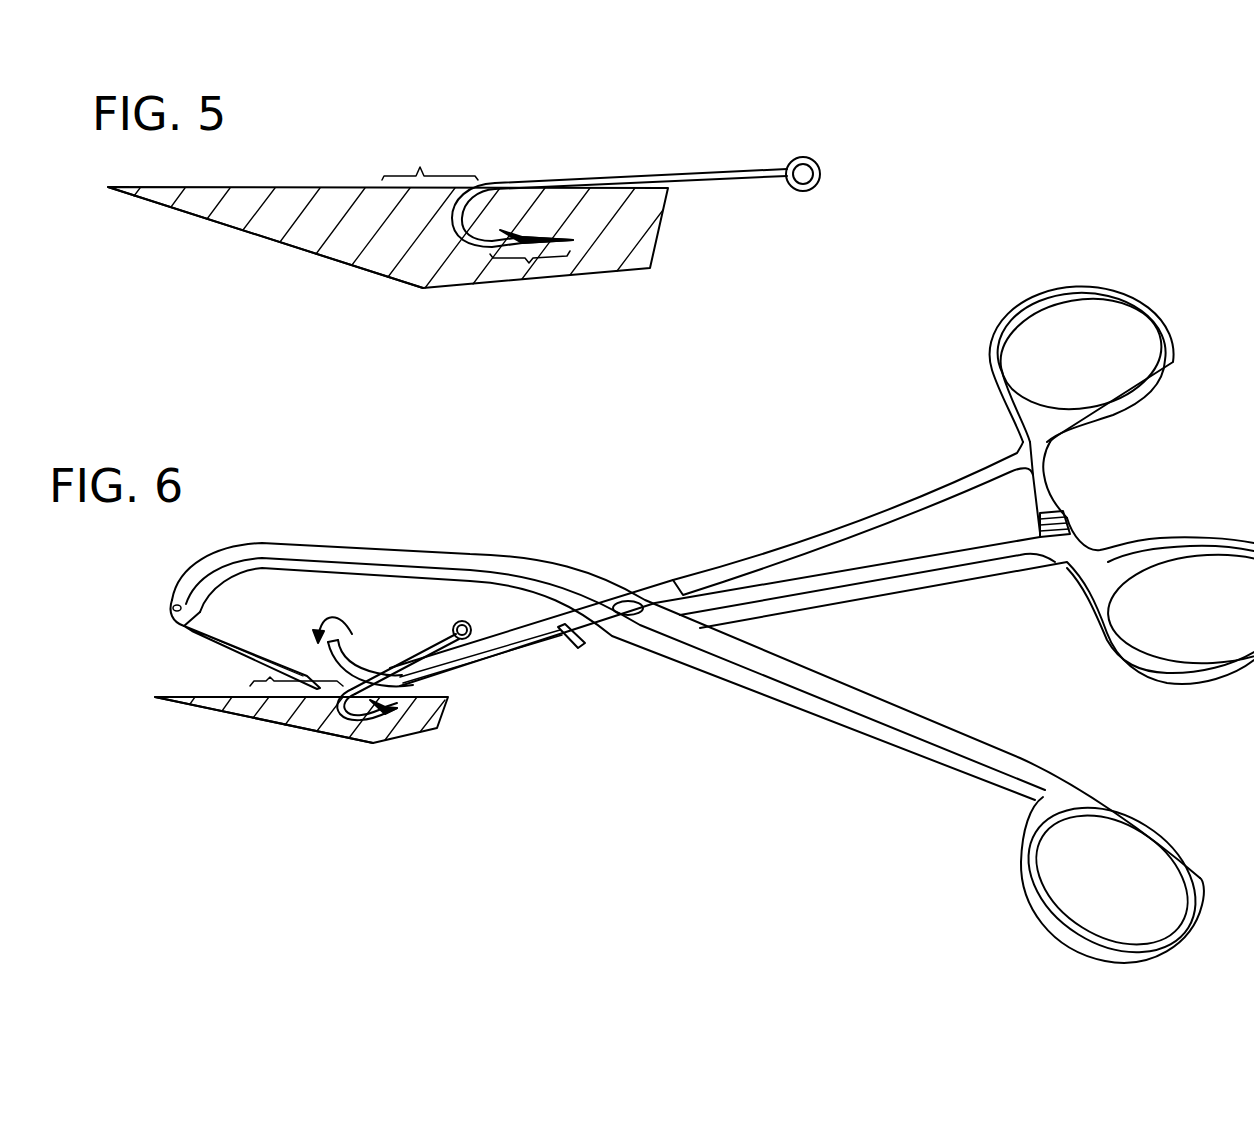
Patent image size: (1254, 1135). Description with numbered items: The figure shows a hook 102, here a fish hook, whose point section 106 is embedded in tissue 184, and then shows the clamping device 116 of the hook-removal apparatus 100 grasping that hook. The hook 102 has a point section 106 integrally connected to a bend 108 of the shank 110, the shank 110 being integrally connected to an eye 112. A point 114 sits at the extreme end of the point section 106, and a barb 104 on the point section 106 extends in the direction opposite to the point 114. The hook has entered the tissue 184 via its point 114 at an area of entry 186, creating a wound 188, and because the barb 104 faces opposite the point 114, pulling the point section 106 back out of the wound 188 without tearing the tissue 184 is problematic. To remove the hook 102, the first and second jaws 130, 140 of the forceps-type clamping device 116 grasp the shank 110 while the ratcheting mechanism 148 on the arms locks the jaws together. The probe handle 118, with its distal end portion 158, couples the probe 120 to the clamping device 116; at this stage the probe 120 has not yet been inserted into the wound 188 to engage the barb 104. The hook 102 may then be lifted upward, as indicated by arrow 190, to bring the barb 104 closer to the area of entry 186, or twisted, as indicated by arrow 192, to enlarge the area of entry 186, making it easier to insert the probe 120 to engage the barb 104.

In FIG. 6, the apparatus 100 is at (685, 634).
In FIG. 5, the hook 102 is at (619, 185).
In FIG. 6, the hook 102 is at (395, 688).
In FIG. 5, the barb 104 is at (517, 229).
In FIG. 5, the point section 106 is at (529, 264).
In FIG. 5, the bend 108 is at (457, 181).
In FIG. 5, the shank 110 is at (704, 170).
In FIG. 6, the shank 110 is at (340, 707).
In FIG. 5, the eye 112 is at (798, 157).
In FIG. 5, the point 114 is at (575, 240).
In FIG. 6, the clamping device 116 is at (815, 531).
In FIG. 6, the probe handle 118 is at (685, 634).
In FIG. 6, the probe 120 is at (194, 638).
In FIG. 6, the first jaw 130 is at (684, 640).
In FIG. 6, the second jaw 140 is at (365, 660).
In FIG. 6, the ratcheting mechanism 148 is at (1060, 485).
In FIG. 6, the distal end portion 158 is at (352, 543).
In FIG. 5, the tissue 184 is at (247, 230).
In FIG. 6, the tissue 184 is at (247, 713).
In FIG. 5, the area of entry 186 is at (429, 160).
In FIG. 6, the area of entry 186 is at (262, 678).
In FIG. 5, the wound 188 is at (432, 195).
In FIG. 6, the wound 188 is at (315, 703).
In FIG. 6, the arrow 190 is at (404, 642).
In FIG. 6, the arrow 192 is at (341, 611).